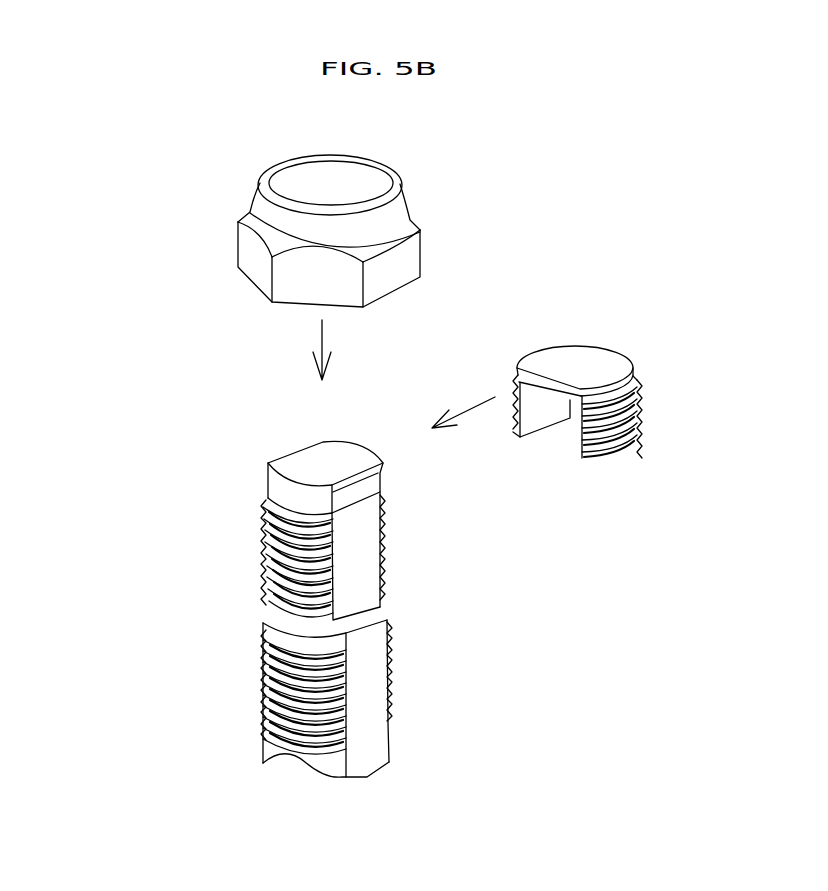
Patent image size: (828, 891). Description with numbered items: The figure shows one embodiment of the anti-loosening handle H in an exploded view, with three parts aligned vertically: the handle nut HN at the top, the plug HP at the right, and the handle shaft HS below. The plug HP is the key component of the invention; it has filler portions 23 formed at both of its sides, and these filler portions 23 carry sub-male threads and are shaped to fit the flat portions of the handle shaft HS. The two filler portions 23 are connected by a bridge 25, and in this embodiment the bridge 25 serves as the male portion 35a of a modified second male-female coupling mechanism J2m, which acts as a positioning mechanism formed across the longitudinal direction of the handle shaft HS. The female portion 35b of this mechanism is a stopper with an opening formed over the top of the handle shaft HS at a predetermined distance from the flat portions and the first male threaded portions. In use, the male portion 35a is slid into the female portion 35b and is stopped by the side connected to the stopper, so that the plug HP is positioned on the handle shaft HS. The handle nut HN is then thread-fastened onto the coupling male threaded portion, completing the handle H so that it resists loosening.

The anti-loosening handle H is at (250, 158).
The handle nut HN is at (226, 191).
The plug HP is at (540, 342).
The handle shaft HS is at (223, 683).
The filler portion 23 is at (640, 402).
The bridge 25 is at (567, 481).
The male portion 35a is at (575, 368).
The female portion 35b is at (383, 473).
The modified second male-female coupling mechanism J2m is at (627, 480).